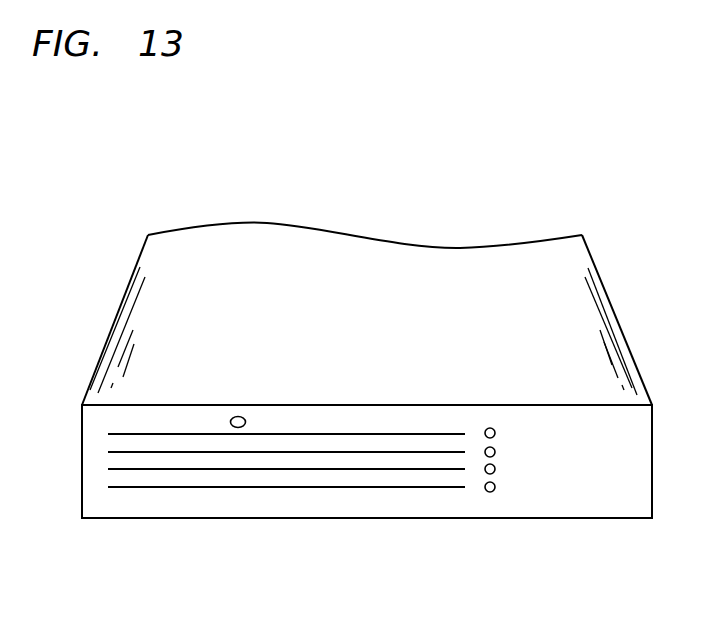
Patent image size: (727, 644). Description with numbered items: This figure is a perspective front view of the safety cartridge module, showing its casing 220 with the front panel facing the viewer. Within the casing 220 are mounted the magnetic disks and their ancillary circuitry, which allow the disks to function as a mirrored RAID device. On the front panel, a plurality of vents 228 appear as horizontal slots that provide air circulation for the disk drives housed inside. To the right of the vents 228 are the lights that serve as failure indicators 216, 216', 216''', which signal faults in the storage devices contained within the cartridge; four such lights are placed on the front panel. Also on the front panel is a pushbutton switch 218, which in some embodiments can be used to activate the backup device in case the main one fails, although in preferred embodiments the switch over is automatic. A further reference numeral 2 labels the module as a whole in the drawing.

The apparatus housing 2 is at (620, 461).
The casing 220 is at (378, 336).
The pushbutton switch 218 is at (231, 421).
The vents 228 is at (97, 461).
The failure indicator 216 is at (560, 492).
The failure indicator 216' is at (562, 516).
The light 216''' is at (565, 546).